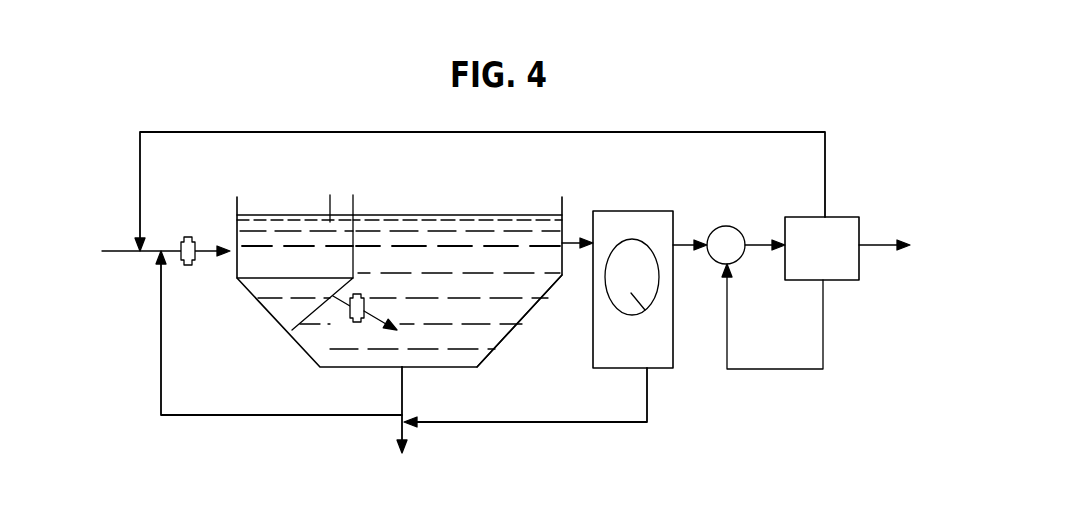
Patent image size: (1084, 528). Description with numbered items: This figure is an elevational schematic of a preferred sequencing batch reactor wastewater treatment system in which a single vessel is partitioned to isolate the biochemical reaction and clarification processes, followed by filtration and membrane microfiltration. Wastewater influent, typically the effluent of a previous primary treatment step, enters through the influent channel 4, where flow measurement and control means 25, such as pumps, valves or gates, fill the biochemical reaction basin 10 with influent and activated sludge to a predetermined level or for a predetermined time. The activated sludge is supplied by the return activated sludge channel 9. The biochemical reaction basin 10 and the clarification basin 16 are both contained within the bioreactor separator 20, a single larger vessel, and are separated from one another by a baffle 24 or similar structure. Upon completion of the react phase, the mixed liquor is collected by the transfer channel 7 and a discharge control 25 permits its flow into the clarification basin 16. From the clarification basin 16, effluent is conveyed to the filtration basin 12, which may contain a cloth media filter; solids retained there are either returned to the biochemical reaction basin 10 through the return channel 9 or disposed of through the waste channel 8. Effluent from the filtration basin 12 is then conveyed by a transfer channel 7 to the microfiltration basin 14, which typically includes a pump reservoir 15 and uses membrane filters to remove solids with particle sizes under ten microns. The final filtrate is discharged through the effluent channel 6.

The influent channel 4 is at (123, 252).
The effluent channel 6 is at (878, 246).
The transfer channel 7 is at (347, 208).
The waste channel 8 is at (410, 423).
The return activated sludge channel 9 is at (362, 132).
The biochemical reaction basin 10 is at (300, 180).
The filtration basin 12 is at (678, 188).
The microfiltration basin 14 is at (802, 222).
The pump reservoir 15 is at (718, 252).
The clarification basin 16 is at (452, 218).
The bioreactor separator 20 is at (522, 325).
The baffle 24 is at (353, 262).
The flow measurement and control means 25 is at (188, 265).